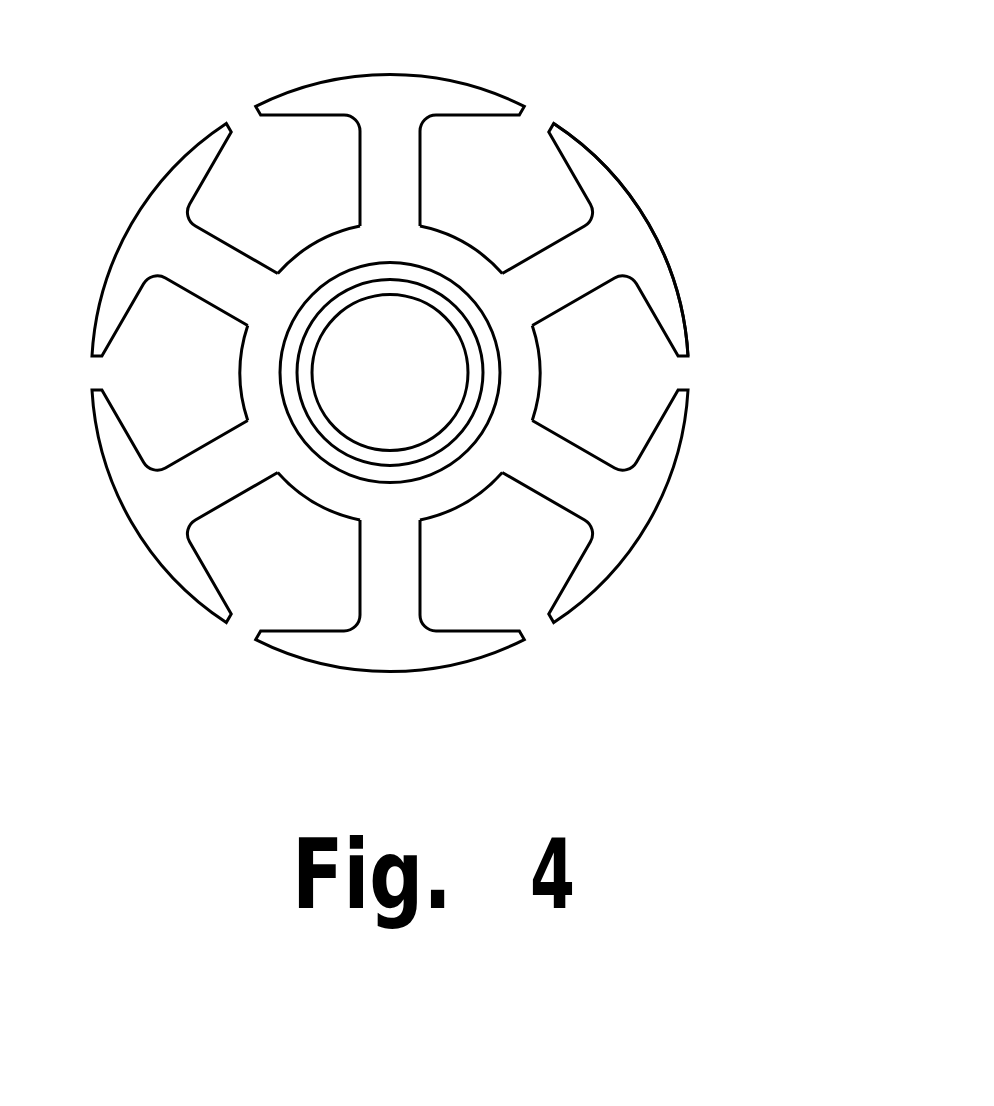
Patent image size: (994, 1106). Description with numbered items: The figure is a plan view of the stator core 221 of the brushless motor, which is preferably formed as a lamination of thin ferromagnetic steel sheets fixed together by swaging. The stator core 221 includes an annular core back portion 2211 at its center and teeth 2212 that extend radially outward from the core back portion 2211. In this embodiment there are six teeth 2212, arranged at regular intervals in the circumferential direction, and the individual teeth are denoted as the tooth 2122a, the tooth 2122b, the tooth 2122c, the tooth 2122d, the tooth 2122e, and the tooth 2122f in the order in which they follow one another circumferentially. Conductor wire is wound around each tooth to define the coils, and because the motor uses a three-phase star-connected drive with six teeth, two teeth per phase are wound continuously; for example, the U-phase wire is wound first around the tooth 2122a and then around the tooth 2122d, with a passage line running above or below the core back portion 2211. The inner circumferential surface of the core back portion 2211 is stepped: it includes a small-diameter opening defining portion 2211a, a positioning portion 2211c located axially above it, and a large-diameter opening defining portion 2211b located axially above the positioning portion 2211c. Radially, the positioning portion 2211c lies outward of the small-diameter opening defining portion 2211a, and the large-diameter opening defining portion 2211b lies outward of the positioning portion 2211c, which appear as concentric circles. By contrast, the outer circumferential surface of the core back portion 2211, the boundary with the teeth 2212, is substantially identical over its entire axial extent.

The stator core 221 is at (153, 43).
The tooth 2122a is at (383, 157).
The tooth 2122b is at (578, 257).
The tooth 2122c is at (572, 498).
The tooth 2122d is at (395, 570).
The tooth 2122e is at (217, 479).
The tooth 2122f is at (183, 270).
The teeth 2212 is at (632, 223).
The core back portion 2211 is at (300, 283).
The small-diameter opening defining portion 2211a is at (473, 383).
The large-diameter opening defining portion 2211b is at (488, 443).
The positioning portion 2211c is at (492, 392).